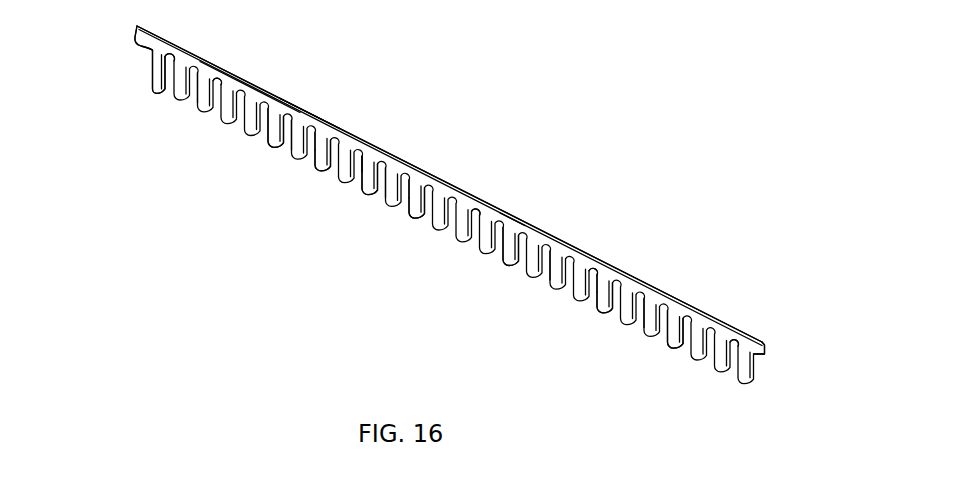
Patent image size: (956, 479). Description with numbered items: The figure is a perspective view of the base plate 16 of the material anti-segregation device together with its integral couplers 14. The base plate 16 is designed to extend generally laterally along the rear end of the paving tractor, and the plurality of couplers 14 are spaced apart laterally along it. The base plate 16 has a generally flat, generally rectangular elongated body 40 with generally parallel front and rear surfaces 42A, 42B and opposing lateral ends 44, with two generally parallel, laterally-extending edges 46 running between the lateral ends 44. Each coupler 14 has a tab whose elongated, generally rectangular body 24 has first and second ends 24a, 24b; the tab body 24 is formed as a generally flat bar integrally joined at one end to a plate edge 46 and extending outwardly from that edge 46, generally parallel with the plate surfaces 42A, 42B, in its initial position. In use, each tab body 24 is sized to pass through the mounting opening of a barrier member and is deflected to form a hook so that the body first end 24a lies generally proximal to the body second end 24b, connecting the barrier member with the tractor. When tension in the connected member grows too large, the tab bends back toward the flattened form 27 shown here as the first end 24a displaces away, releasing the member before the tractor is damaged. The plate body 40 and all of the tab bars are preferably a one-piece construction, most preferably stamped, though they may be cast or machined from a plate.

The coupler 14 is at (153, 103).
The base plate 16 is at (130, 40).
The tab body 24 is at (153, 86).
The body first end 24a is at (333, 175).
The body second end 24b is at (333, 147).
The flattened form 27 is at (200, 101).
The elongated body 40 is at (202, 62).
The front surface 42A is at (248, 96).
The rear surface 42B is at (298, 105).
The lateral end 44 is at (138, 26).
The edge 46 is at (367, 185).